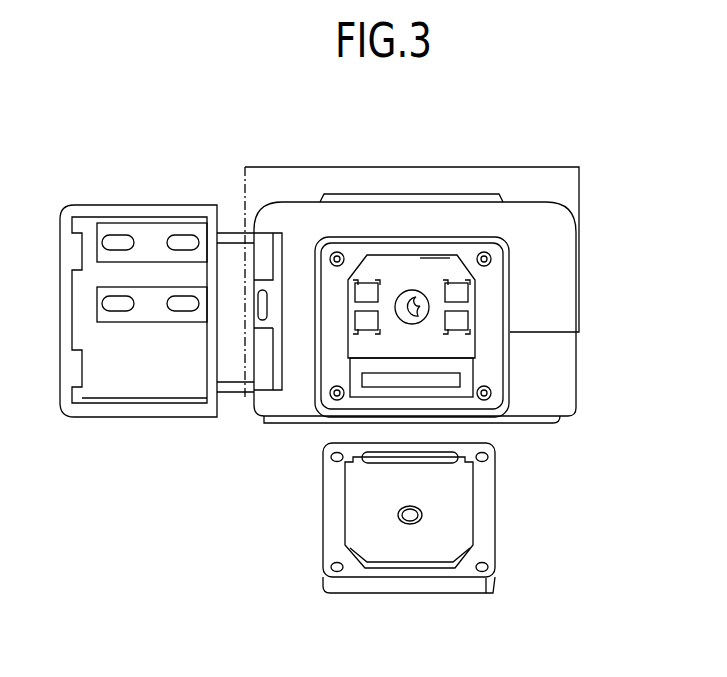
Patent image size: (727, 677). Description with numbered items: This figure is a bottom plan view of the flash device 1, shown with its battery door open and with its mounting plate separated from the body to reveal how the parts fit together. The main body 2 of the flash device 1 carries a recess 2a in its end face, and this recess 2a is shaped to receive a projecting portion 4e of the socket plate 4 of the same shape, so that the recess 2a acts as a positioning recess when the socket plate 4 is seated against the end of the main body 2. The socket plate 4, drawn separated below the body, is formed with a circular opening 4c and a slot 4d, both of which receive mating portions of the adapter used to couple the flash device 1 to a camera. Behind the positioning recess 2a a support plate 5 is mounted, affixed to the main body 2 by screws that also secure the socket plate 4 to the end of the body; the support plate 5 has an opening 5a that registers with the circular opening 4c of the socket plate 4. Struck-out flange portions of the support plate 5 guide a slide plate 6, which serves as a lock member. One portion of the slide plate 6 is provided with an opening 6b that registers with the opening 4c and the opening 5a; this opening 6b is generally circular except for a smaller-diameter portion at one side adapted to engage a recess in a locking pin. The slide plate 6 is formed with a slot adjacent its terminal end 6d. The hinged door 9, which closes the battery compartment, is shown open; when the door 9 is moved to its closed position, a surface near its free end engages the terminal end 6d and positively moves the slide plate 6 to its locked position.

The flash device 1 is at (286, 150).
The main body 2 is at (540, 236).
The recess 2a is at (426, 258).
The socket plate 4 is at (485, 485).
The circular opening 4c is at (420, 517).
The slot 4d is at (400, 460).
The projecting portion 4e is at (365, 527).
The support plate 5 is at (455, 265).
The opening 5a is at (400, 290).
The slide plate 6 is at (362, 318).
The opening 6b is at (417, 308).
The terminal end 6d is at (258, 303).
The hinged door 9 is at (118, 377).